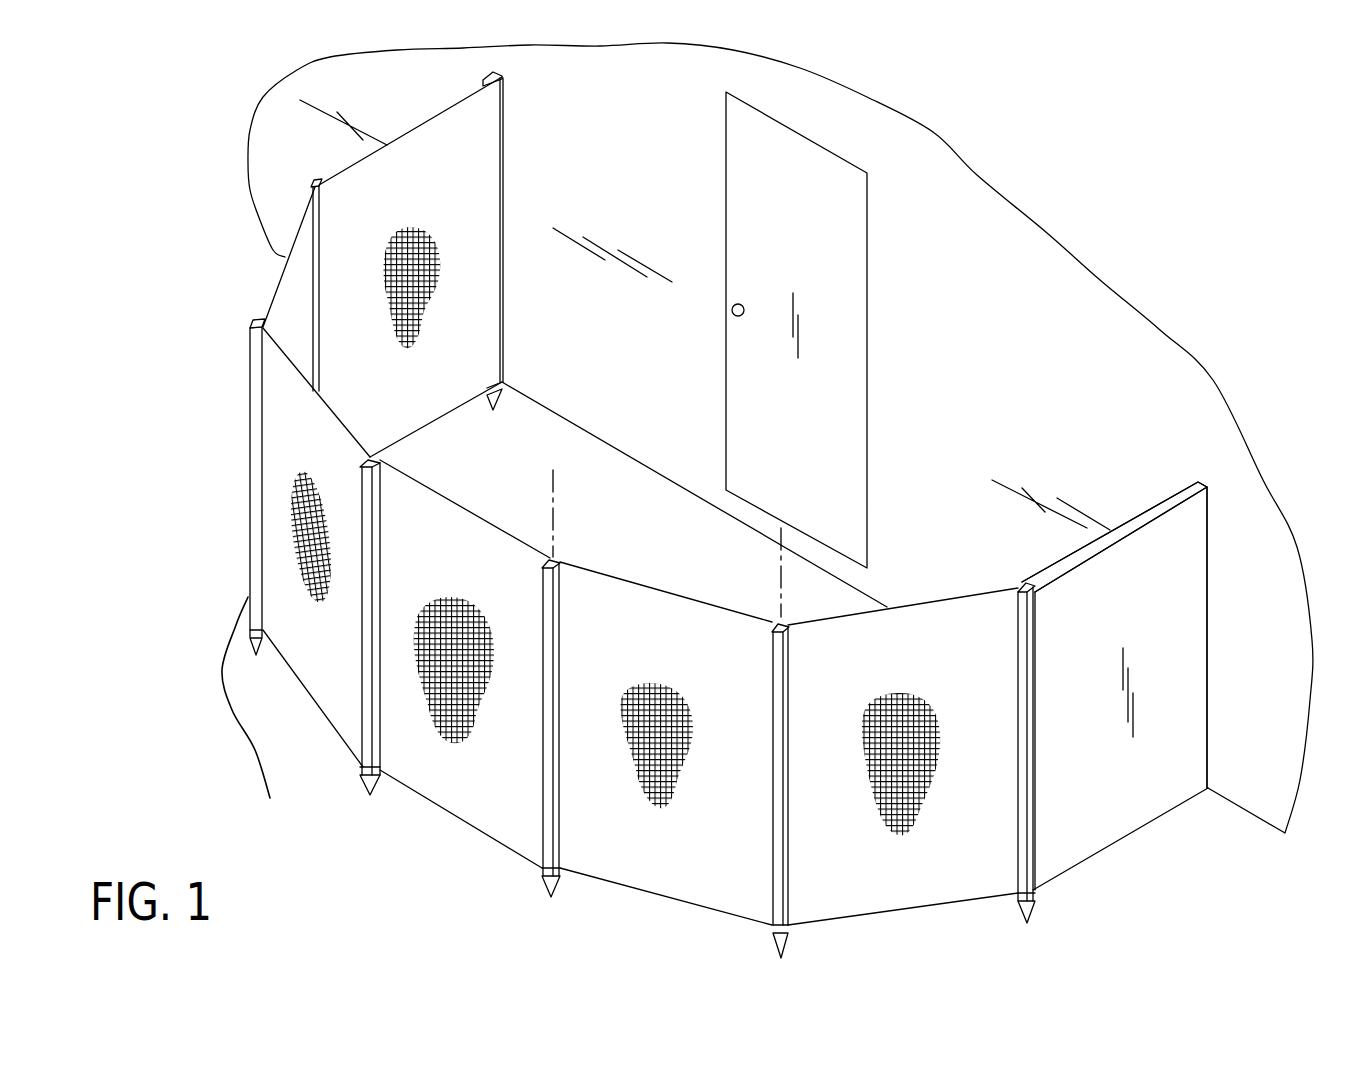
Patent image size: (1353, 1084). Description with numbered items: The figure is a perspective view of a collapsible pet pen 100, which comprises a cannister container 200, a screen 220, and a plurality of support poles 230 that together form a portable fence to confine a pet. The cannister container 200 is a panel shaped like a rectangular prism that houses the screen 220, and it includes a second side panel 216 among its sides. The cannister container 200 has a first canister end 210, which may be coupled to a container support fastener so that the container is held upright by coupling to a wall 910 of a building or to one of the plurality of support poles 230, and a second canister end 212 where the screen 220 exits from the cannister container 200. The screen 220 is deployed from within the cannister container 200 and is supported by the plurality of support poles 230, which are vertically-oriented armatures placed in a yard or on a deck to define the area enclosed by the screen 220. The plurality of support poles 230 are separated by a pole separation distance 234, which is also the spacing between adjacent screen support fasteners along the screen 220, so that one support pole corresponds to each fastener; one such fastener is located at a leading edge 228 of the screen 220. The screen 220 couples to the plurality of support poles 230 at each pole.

The collapsible pet pen 100 is at (1168, 210).
The cannister container 200 is at (1160, 533).
The first canister end 210 is at (1195, 770).
The second canister end 212 is at (1038, 872).
The second side panel 216 is at (1187, 677).
The screen 220 is at (637, 870).
The leading edge 228 is at (483, 158).
The plurality of support poles 230 is at (545, 820).
The pole separation distance 234 is at (772, 566).
The wall 910 is at (1028, 270).